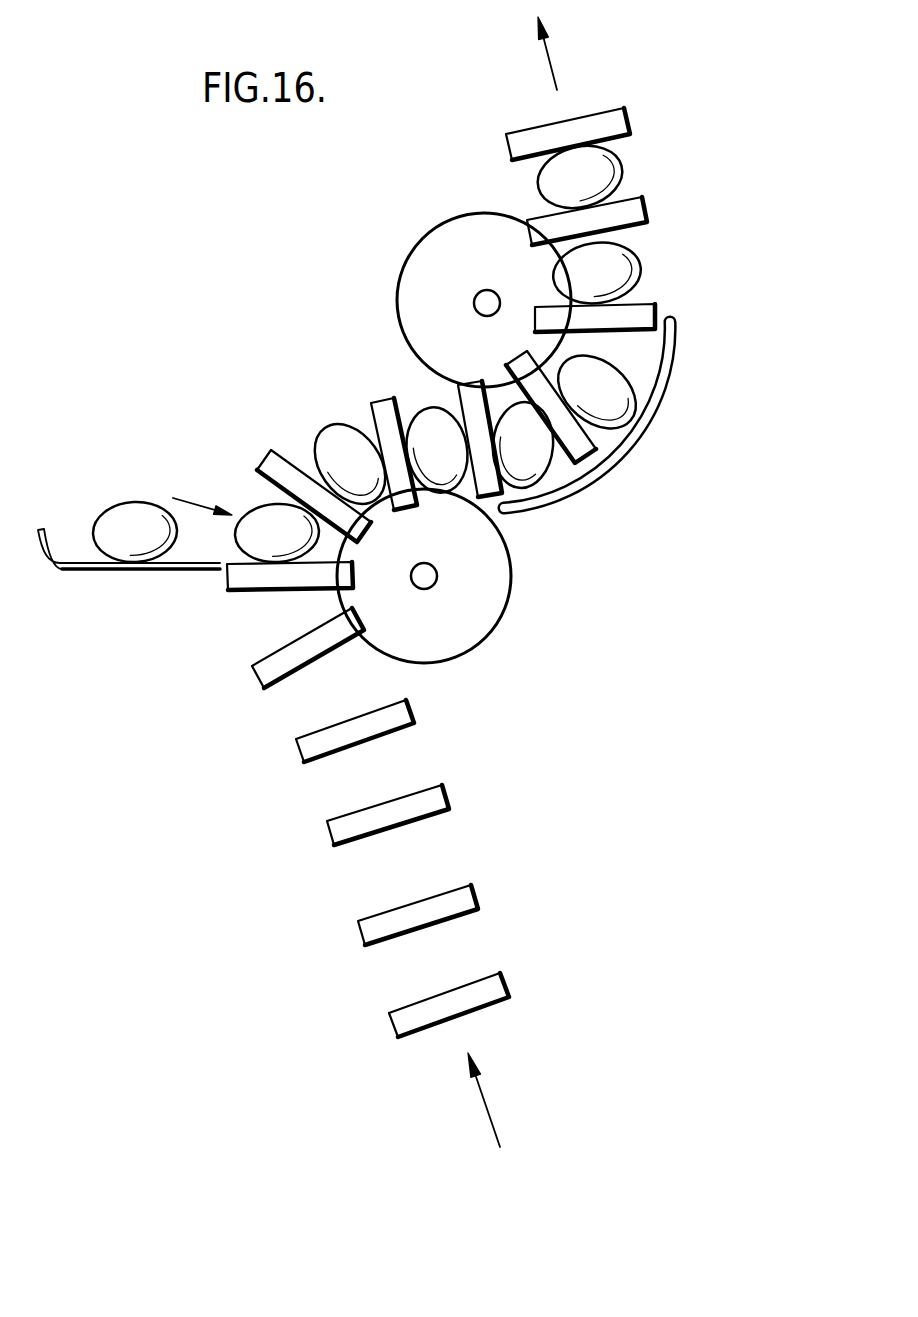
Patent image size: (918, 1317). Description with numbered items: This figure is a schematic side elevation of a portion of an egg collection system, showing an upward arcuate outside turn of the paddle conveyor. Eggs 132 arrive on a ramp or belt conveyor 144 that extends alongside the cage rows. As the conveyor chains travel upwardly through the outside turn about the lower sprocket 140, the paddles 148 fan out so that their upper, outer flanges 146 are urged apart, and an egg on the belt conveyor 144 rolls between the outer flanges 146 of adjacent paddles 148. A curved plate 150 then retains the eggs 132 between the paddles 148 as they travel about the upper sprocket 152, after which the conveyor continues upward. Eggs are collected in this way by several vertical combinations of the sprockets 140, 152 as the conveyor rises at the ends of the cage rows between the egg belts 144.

The eggs 132 is at (112, 503).
The sprocket 140 is at (500, 593).
The ramp or belt conveyor 144 is at (78, 573).
The outer flange 146 is at (268, 458).
The paddles 148 is at (293, 462).
The plate 150 is at (660, 415).
The sprocket 152 is at (431, 270).